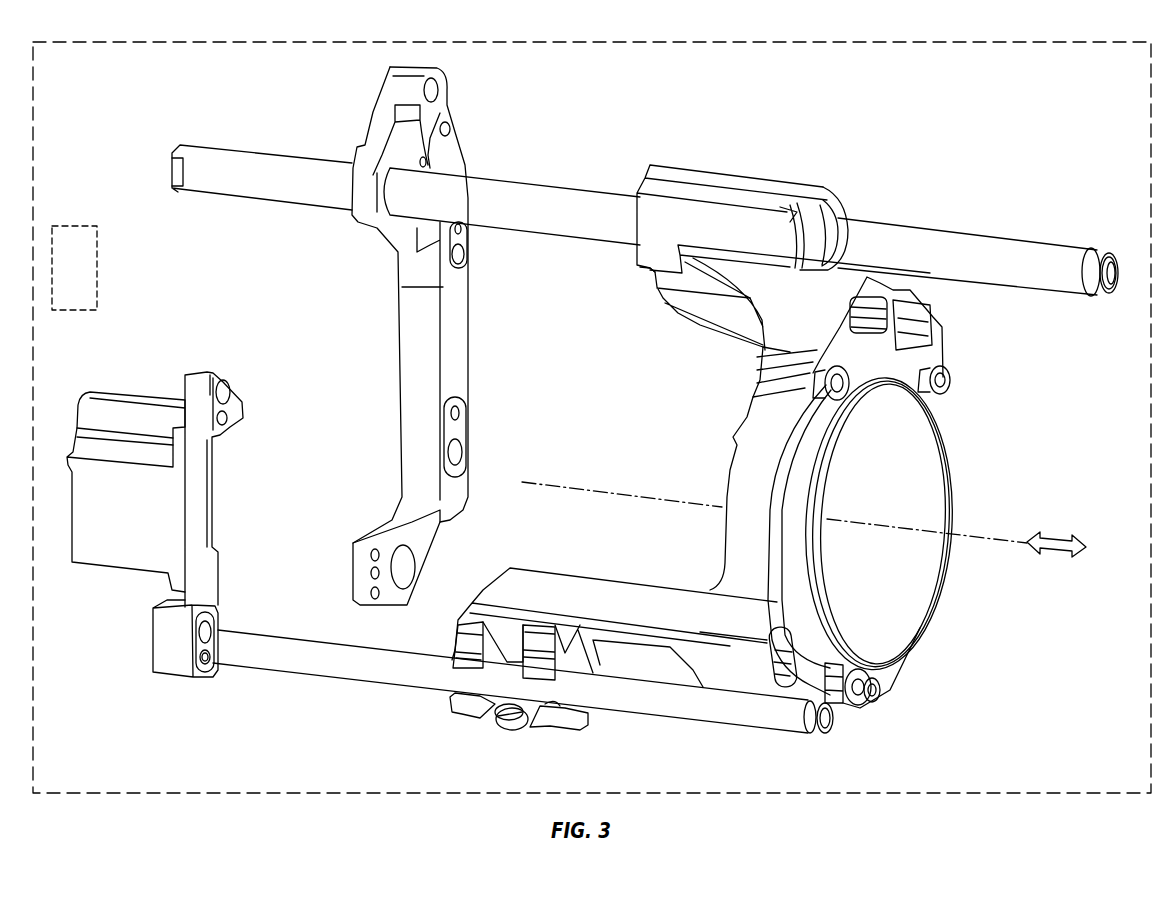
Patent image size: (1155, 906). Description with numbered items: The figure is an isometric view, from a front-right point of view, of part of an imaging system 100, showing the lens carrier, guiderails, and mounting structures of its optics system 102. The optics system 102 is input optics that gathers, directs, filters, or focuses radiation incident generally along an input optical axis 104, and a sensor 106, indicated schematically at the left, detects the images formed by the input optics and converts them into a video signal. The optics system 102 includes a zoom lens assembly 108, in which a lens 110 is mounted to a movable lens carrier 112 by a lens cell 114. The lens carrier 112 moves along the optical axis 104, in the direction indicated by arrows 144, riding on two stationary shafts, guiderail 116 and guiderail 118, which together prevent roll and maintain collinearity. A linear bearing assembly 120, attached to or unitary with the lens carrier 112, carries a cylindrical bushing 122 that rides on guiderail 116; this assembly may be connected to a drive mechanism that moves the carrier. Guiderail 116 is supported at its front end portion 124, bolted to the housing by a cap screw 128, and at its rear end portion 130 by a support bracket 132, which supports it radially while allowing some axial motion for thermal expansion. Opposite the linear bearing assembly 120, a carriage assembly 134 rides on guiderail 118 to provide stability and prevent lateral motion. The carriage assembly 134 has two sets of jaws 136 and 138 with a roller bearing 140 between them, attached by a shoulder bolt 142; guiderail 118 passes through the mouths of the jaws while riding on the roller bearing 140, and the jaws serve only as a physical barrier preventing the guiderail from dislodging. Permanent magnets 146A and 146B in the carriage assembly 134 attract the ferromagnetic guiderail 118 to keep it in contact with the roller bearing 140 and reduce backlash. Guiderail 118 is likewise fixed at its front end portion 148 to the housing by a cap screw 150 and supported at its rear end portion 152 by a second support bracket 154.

The imaging system 100 is at (110, 42).
The optics system 102 is at (1030, 82).
The input optical axis 104 is at (963, 533).
The sensor 106 is at (95, 226).
The zoom lens assembly 108 is at (960, 644).
The lens 110 is at (920, 573).
The lens carrier 112 is at (745, 428).
The lens cell 114 is at (833, 628).
The guiderail 116 is at (960, 238).
The guiderail 118 is at (320, 665).
The linear bearing assembly 120 is at (772, 156).
The cylindrical bushing 122 is at (840, 214).
The front end portion 124 is at (1113, 232).
The cap screw 128 is at (1114, 282).
The rear end portion 130 is at (277, 134).
The support bracket 132 is at (457, 350).
The carriage assembly 134 is at (408, 739).
The jaws 136 is at (604, 641).
The jaws 138 is at (435, 636).
The roller bearing 140 is at (528, 728).
The shoulder bolt 142 is at (508, 730).
The arrows 144 is at (1055, 551).
The permanent magnet 146A is at (548, 705).
The permanent magnet 146B is at (465, 715).
The front end portion 148 is at (782, 745).
The cap screw 150 is at (833, 716).
The rear end portion 152 is at (218, 688).
The support bracket 154 is at (205, 512).